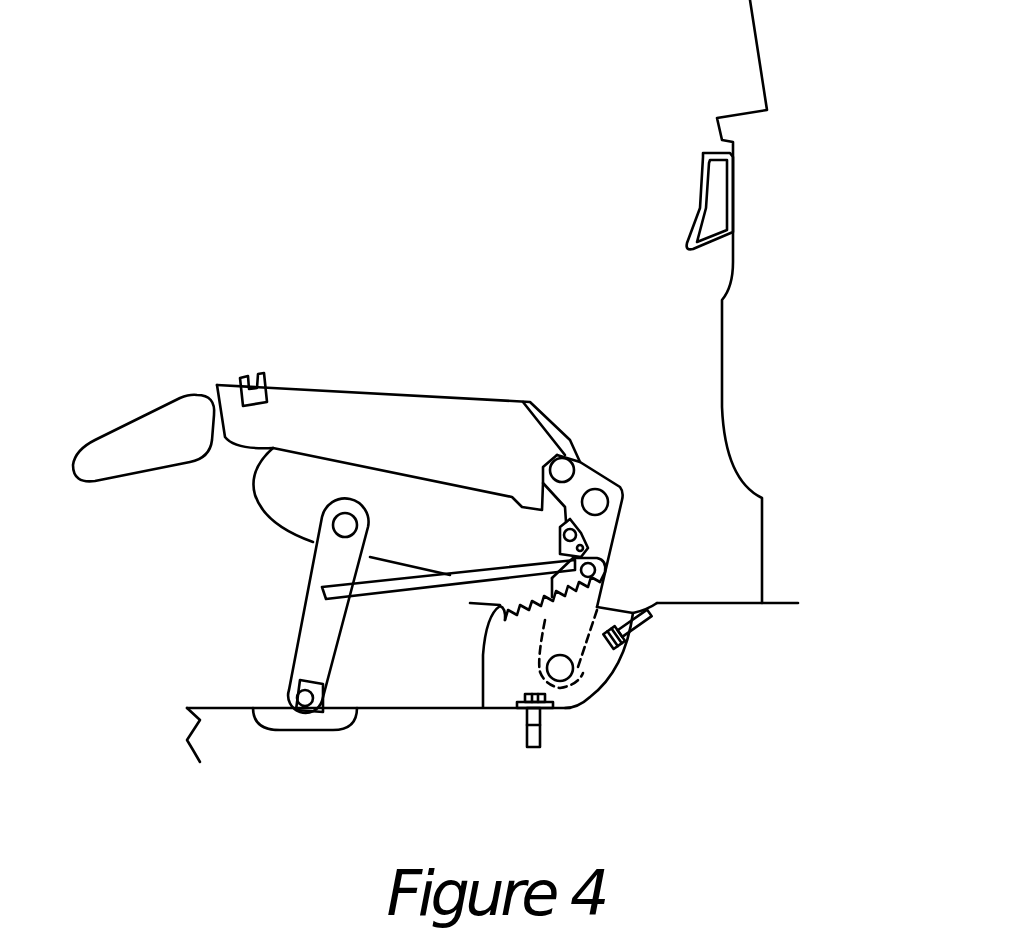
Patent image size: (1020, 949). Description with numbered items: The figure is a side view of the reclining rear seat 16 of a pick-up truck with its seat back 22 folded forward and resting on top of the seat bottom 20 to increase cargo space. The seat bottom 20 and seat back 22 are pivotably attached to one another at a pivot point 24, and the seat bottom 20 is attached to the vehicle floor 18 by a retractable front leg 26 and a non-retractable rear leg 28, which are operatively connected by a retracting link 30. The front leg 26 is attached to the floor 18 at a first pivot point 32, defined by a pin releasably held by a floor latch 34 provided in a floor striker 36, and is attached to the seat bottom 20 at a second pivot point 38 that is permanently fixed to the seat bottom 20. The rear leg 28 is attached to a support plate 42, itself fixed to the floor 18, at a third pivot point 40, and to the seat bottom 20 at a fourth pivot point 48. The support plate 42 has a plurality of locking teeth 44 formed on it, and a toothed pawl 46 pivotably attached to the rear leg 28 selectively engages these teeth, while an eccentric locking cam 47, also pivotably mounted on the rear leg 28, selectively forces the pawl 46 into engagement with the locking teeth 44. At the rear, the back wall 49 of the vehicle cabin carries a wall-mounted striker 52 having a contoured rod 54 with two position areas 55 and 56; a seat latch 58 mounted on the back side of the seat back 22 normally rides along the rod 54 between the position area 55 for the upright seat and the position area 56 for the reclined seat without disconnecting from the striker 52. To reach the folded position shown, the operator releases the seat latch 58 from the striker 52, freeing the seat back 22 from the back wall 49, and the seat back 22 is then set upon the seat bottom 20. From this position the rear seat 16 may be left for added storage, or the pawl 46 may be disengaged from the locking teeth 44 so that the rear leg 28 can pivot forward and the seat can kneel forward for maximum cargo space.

The rear seat 16 is at (73, 373).
The vehicle floor 18 is at (218, 735).
The seat bottom 20 is at (290, 482).
The seat back 22 is at (403, 423).
The pivot point 24 is at (562, 470).
The front leg 26 is at (320, 637).
The rear leg 28 is at (604, 540).
The retracting link 30 is at (472, 578).
The first pivot point 32 is at (305, 700).
The floor latch 34 is at (313, 705).
The floor striker 36 is at (283, 718).
The second pivot point 38 is at (318, 540).
The third pivot point 40 is at (560, 668).
The support plate 42 is at (508, 680).
The locking teeth 44 is at (472, 603).
The toothed pawl 46 is at (593, 580).
The locking cam 47 is at (598, 537).
The fourth pivot point 48 is at (620, 486).
The back wall 49 is at (815, 343).
The striker 52 is at (718, 243).
The contoured rod 54 is at (733, 157).
The position area 55 is at (703, 170).
The position area 56 is at (695, 223).
The seat latch 58 is at (242, 385).